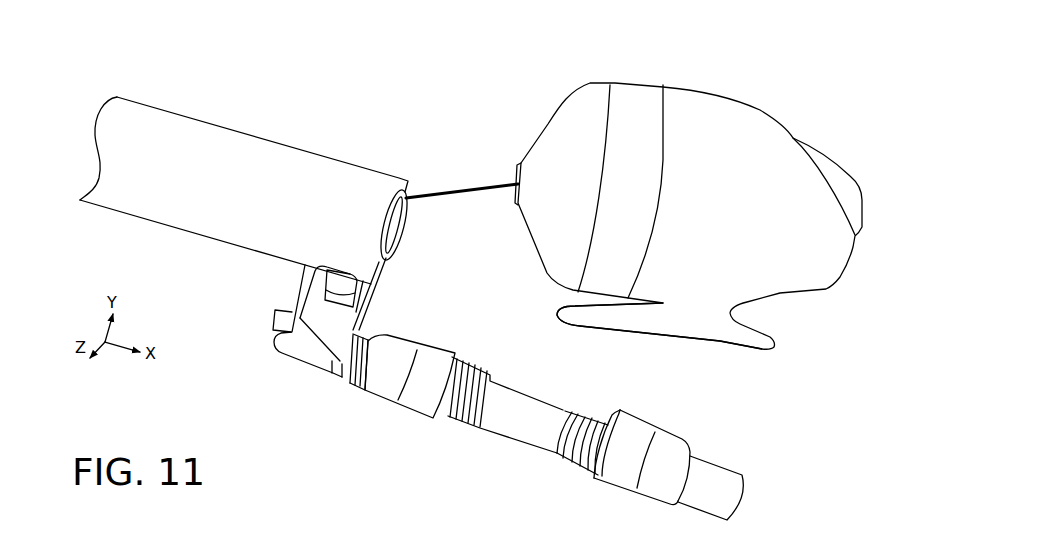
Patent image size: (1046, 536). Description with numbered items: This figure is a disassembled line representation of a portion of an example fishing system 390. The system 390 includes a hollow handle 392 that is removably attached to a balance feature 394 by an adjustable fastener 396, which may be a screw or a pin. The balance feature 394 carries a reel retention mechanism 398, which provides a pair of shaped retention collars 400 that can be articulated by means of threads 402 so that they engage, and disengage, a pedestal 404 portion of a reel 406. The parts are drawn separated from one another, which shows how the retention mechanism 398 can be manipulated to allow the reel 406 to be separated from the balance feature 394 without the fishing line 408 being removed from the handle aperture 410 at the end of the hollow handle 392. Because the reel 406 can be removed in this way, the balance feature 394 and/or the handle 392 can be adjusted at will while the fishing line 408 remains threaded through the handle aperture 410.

The fishing system 390 is at (152, 67).
The hollow handle 392 is at (318, 207).
The balance feature 394 is at (746, 514).
The adjustable fastener 396 is at (291, 278).
The reel retention mechanism 398 is at (465, 355).
The shaped retention collars 400 is at (607, 484).
The threads 402 is at (477, 421).
The pedestal 404 is at (723, 341).
The reel 406 is at (728, 222).
The fishing line 408 is at (455, 191).
The handle aperture 410 is at (402, 230).